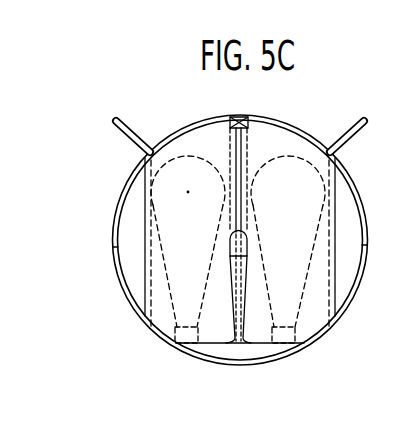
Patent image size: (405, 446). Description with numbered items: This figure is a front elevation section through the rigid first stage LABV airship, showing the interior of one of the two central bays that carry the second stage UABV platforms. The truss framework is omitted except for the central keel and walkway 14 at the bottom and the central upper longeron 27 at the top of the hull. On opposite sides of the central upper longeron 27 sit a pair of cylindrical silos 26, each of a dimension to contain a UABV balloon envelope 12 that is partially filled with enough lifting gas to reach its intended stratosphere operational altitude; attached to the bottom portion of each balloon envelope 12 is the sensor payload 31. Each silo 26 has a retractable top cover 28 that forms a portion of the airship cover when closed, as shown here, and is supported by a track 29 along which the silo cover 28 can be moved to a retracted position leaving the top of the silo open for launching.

The UABV balloon envelope 12 is at (190, 191).
The central keel and walkway 14 is at (230, 250).
The cylindrical silo 26 is at (145, 272).
The central upper longeron 27 is at (249, 121).
The retractable top cover 28 is at (178, 130).
The track 29 is at (115, 210).
The sensor payload 31 is at (170, 348).